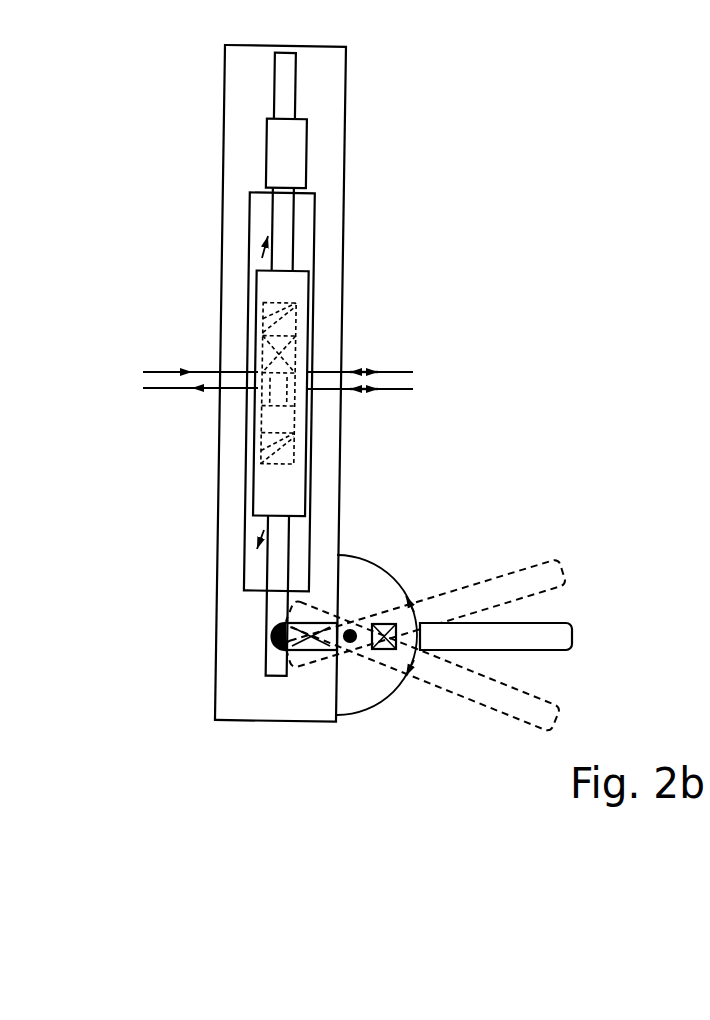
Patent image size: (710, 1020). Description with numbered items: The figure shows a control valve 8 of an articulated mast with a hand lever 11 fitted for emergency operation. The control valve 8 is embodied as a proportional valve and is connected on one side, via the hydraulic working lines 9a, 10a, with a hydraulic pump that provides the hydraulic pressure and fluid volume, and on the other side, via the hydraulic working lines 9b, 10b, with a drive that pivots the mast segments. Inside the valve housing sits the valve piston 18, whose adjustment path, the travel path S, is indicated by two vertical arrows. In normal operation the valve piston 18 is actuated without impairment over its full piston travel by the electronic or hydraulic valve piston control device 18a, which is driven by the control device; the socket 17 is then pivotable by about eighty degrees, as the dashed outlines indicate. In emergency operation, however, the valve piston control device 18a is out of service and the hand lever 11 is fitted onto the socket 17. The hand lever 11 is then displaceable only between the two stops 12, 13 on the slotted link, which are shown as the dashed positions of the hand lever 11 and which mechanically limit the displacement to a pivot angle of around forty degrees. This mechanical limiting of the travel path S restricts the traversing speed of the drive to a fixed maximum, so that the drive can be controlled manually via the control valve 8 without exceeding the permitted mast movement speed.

The control valve 8 is at (183, 97).
The valve piston control device 18a is at (285, 132).
The valve piston 18 is at (284, 294).
The socket 17 is at (205, 393).
The travel path S is at (262, 254).
The hydraulic working line 9a is at (163, 365).
The hydraulic working line 10a is at (166, 395).
The hydraulic working line 9b is at (397, 366).
The hydraulic working line 10b is at (424, 392).
The stop 12 is at (408, 597).
The stop 13 is at (380, 683).
The hand lever 11 is at (531, 638).